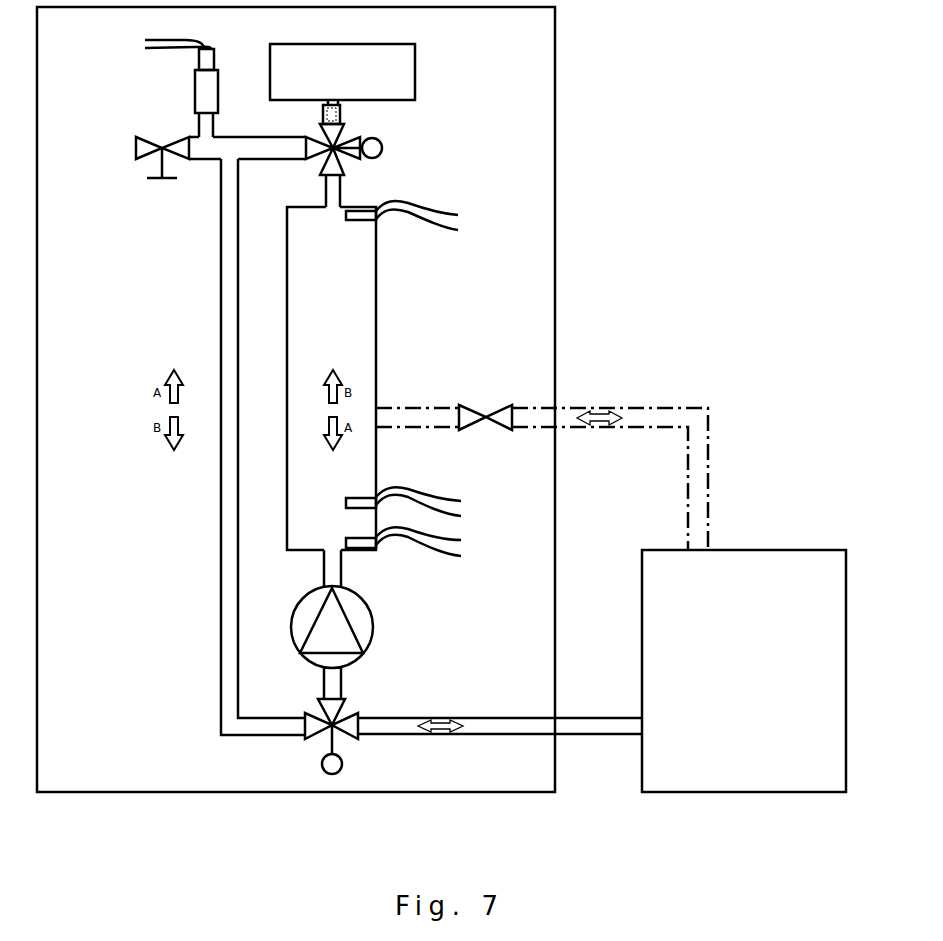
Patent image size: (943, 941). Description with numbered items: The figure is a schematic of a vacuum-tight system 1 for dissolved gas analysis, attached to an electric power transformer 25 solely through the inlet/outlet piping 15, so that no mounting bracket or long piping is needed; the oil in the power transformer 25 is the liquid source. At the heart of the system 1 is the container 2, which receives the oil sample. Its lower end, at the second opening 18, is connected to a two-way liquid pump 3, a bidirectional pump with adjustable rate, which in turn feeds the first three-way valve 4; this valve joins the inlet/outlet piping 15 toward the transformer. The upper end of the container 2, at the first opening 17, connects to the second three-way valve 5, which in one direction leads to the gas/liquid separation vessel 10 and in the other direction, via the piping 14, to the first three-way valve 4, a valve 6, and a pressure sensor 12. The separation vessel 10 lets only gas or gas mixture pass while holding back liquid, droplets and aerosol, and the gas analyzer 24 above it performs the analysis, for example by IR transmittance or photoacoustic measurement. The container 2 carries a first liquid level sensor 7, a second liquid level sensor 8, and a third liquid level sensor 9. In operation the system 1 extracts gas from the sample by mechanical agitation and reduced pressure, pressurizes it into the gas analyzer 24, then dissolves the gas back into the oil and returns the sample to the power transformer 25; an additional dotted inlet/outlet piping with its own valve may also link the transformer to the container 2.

The system 1 is at (555, 375).
The container 2 is at (376, 398).
The two-way liquid pump 3 is at (375, 612).
The first three-way valve 4 is at (345, 713).
The second three-way valve 5 is at (345, 153).
The valve 6 is at (160, 152).
The first liquid level sensor 7 is at (378, 219).
The second liquid level sensor 8 is at (376, 488).
The third liquid level sensor 9 is at (378, 549).
The gas/liquid separation vessel 10 is at (342, 114).
The pressure sensor 12 is at (195, 93).
The piping 14 is at (221, 297).
The inlet/outlet piping 15 is at (410, 735).
The first opening 17 is at (330, 209).
The second opening 18 is at (326, 552).
The gas analyzer 24 is at (415, 75).
The power transformer 25 is at (786, 550).